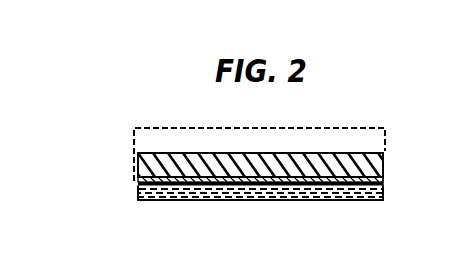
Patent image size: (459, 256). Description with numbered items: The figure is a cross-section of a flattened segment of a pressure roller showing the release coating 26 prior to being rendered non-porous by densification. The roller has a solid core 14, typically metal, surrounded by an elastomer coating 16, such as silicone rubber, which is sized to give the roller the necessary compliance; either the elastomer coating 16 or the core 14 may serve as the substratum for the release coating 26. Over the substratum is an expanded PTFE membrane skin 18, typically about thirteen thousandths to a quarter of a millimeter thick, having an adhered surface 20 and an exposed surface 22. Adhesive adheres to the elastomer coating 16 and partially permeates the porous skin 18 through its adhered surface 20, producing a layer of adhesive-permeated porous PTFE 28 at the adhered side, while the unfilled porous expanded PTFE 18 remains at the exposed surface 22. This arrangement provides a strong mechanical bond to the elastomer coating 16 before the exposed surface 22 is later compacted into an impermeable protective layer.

The solid core 14 is at (376, 142).
The elastomer coating 16 is at (383, 165).
The adhered surface 20 is at (136, 179).
The adhesive-permeated porous PTFE 28 is at (136, 188).
The expanded PTFE membrane skin 18 is at (125, 201).
The exposed surface 22 is at (242, 202).
The release coating 26 is at (395, 180).